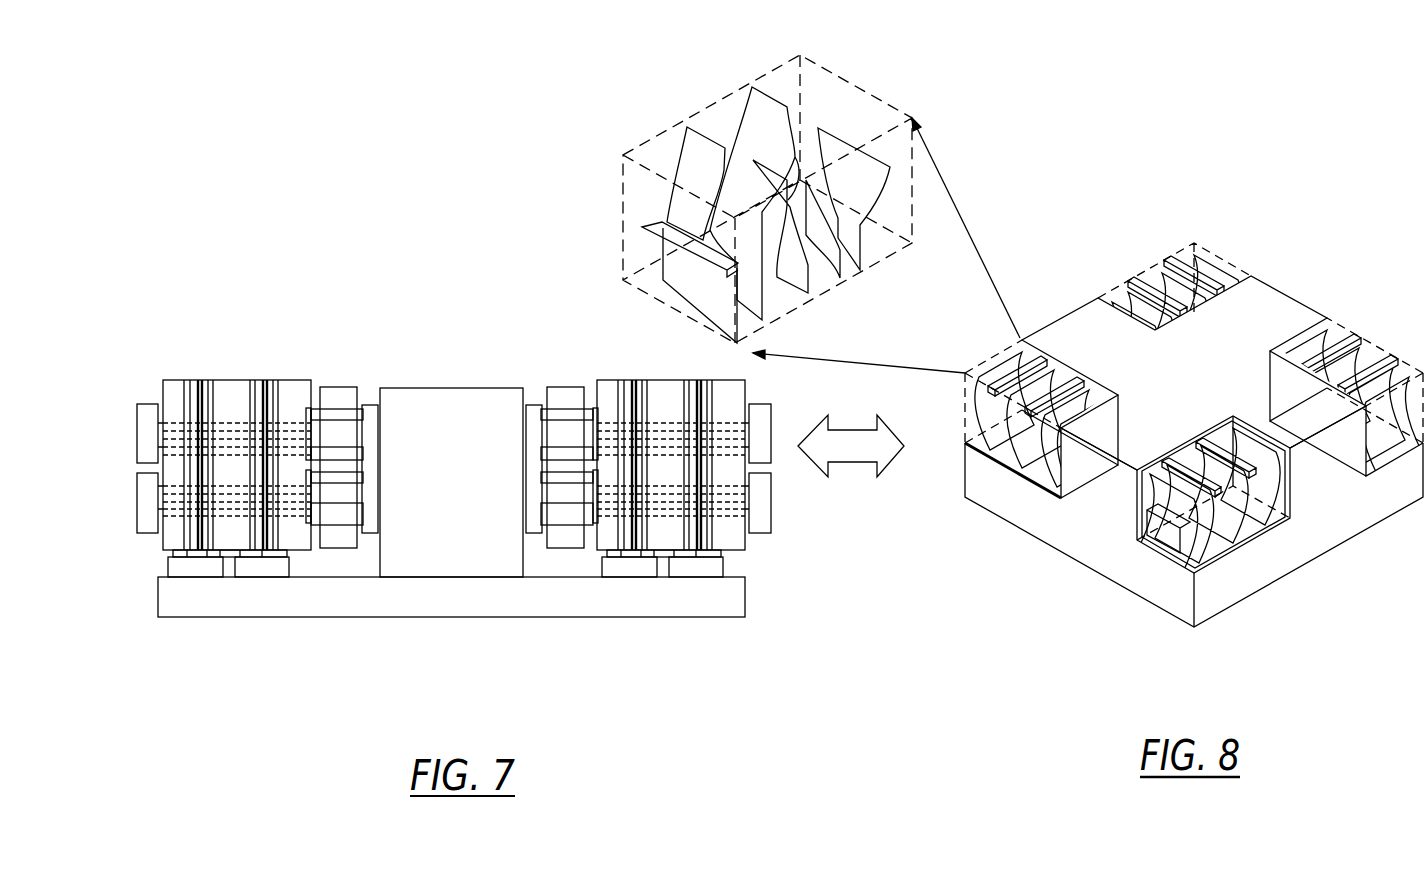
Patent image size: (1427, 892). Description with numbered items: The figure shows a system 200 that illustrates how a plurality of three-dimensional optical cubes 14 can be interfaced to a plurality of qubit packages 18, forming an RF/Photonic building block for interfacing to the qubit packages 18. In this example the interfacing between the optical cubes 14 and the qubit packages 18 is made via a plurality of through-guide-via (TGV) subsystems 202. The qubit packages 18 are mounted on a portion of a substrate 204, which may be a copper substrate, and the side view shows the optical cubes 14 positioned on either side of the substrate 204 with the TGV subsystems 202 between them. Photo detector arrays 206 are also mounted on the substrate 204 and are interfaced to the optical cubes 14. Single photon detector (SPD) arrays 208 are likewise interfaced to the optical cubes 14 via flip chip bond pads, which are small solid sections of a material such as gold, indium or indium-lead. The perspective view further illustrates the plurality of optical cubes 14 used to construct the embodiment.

In FIG. 7, the 3D optical cube 14 is at (160, 543).
In FIG. 8, the 3D optical cube 14 is at (732, 92).
In FIG. 7, the qubit package 18 is at (375, 432).
In FIG. 8, the qubit package 18 is at (1222, 537).
In FIG. 7, the system 200 is at (418, 285).
In FIG. 8, the system 200 is at (1270, 200).
In FIG. 7, the through-guide-via (TGV) subsystem 202 is at (342, 393).
In FIG. 7, the substrate 204 is at (470, 574).
In FIG. 8, the substrate 204 is at (1200, 373).
In FIG. 7, the photo detector array 206 is at (197, 567).
In FIG. 7, the single photon detector (SPD) array 208 is at (140, 432).